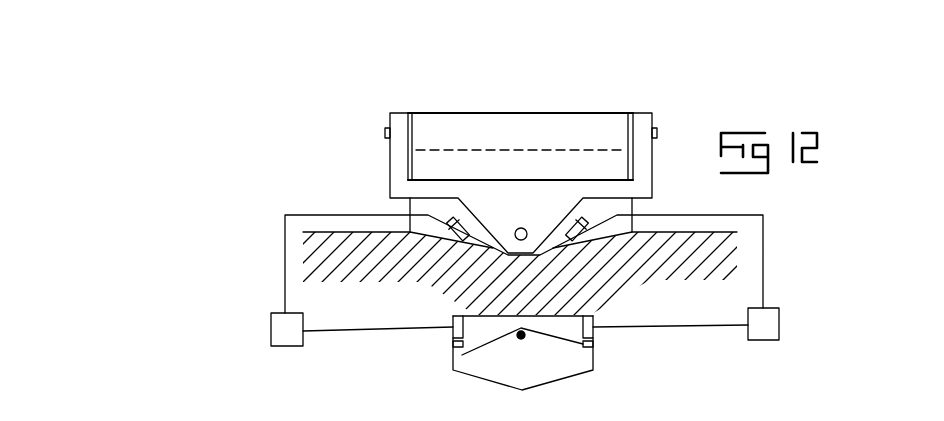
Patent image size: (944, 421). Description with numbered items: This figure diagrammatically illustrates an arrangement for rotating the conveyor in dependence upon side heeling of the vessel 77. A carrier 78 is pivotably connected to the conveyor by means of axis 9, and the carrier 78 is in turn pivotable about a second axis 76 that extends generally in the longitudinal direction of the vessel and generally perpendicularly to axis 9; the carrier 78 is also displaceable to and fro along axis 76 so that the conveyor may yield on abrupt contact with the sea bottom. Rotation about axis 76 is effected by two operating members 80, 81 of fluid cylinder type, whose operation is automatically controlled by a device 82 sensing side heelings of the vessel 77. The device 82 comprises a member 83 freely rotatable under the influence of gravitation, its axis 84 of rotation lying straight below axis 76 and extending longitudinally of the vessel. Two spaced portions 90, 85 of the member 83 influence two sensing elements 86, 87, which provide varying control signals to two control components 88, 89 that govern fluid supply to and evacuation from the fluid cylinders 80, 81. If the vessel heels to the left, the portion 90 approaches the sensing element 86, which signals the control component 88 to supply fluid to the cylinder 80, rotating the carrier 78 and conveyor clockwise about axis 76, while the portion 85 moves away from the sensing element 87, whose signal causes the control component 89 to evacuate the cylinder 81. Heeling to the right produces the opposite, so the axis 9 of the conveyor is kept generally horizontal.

The axis 9 is at (387, 133).
The carrier 78 is at (643, 168).
The vessel 77 is at (331, 232).
The operating member 80 is at (466, 231).
The operating member 81 is at (569, 231).
The second axis 76 is at (521, 228).
The device 82 is at (530, 344).
The member 83 is at (592, 363).
The axis of rotation 84 is at (524, 338).
The portion 85 is at (592, 344).
The sensing element 86 is at (452, 318).
The sensing element 87 is at (593, 332).
The control component 88 is at (286, 334).
The control component 89 is at (765, 322).
The portion 90 is at (455, 347).